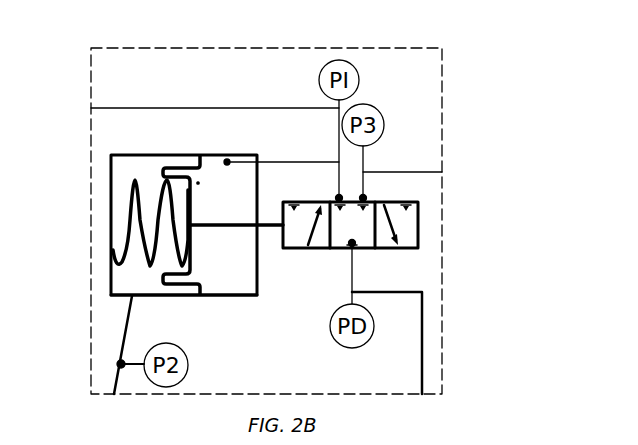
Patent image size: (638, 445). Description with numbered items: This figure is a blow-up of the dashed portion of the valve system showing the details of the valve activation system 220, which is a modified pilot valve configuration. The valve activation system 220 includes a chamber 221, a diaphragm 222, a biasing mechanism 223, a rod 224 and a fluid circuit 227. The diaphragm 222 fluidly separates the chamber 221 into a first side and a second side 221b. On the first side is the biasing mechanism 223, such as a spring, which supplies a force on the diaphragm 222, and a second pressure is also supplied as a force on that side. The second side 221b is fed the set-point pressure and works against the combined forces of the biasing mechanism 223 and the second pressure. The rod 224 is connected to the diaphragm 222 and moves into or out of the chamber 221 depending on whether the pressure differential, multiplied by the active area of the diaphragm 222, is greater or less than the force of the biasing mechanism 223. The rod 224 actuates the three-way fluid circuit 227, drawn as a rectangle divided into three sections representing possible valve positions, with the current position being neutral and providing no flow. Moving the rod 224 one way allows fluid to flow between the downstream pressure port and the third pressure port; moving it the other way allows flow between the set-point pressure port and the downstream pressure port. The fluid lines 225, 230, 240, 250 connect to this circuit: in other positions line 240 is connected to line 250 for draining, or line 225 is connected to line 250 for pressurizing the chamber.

The valve activation system 220 is at (407, 145).
The fluid line 225 is at (157, 108).
The chamber 221 is at (157, 194).
The biasing mechanism 223 is at (113, 237).
The diaphragm 222 is at (197, 200).
The rod 224 is at (213, 225).
The second side 221b is at (218, 268).
The fluid circuit 227 is at (421, 235).
The fluid line 250 is at (405, 172).
The fluid line 230 is at (130, 317).
The fluid line 240 is at (418, 308).